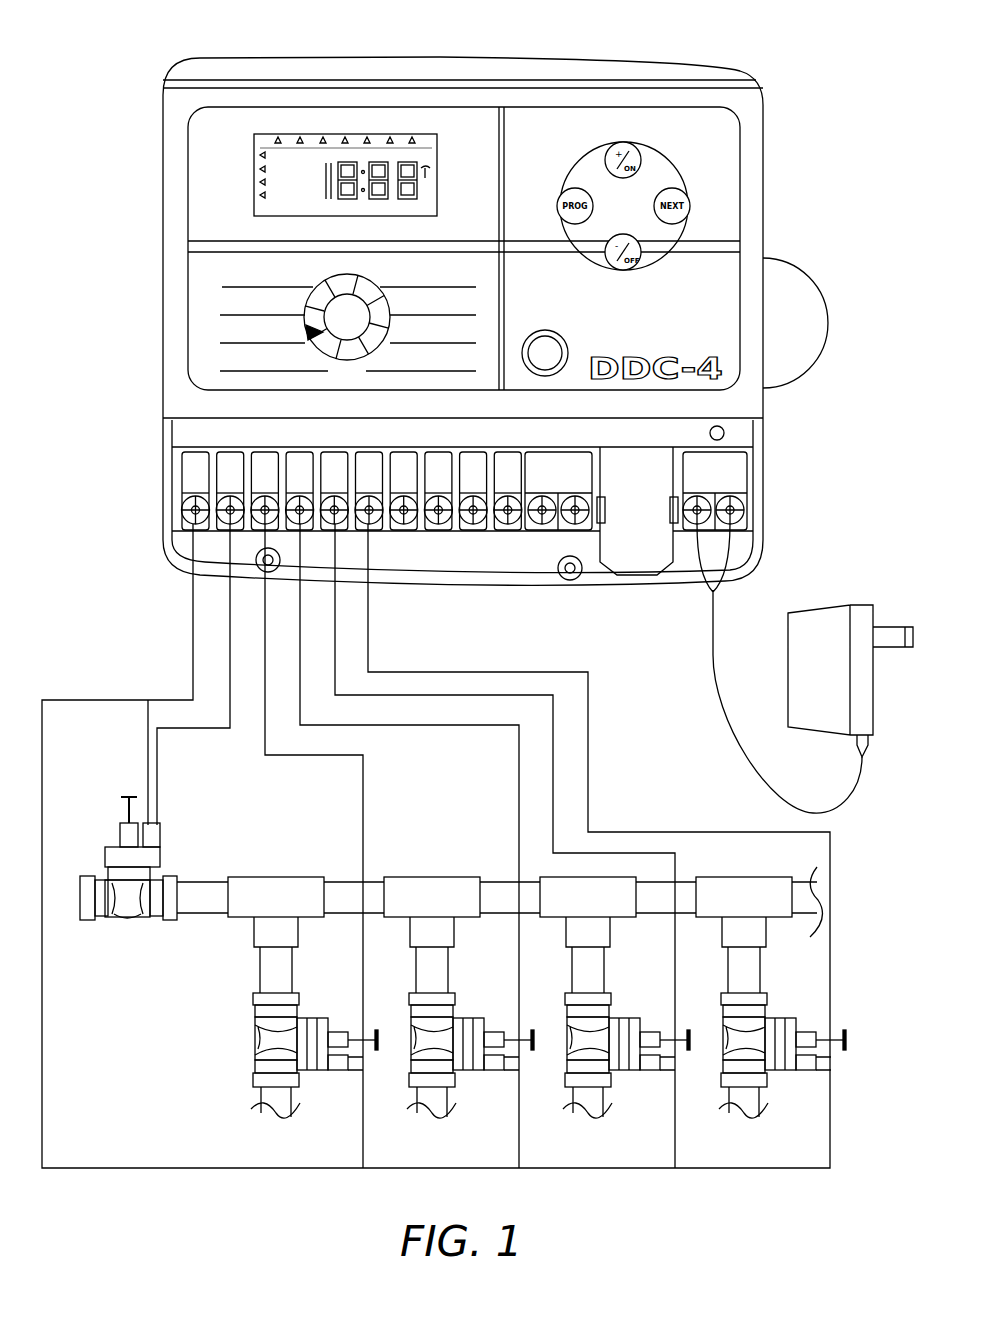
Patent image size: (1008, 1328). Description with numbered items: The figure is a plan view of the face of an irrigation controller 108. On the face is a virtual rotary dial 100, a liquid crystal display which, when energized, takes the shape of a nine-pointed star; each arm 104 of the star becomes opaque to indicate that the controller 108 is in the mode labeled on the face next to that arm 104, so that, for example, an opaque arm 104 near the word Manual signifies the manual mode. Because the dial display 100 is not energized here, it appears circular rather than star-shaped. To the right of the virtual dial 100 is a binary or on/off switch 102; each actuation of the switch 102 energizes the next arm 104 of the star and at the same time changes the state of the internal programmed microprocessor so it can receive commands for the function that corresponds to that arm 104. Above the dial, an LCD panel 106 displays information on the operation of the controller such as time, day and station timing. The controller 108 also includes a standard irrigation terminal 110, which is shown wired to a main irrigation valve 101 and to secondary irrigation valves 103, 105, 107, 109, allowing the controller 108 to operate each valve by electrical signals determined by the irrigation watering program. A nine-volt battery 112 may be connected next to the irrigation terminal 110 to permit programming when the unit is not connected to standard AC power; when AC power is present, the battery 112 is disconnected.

The virtual rotary dial 100 is at (312, 281).
The main irrigation valve 101 is at (102, 855).
The binary or on/off switch 102 is at (568, 340).
The secondary irrigation valve 103 is at (318, 1070).
The arm 104 is at (318, 331).
The secondary irrigation valve 105 is at (474, 1070).
The LCD panel 106 is at (437, 133).
The secondary irrigation valve 107 is at (630, 1070).
The irrigation controller 108 is at (160, 367).
The secondary irrigation valve 109 is at (786, 1070).
The irrigation terminal 110 is at (162, 488).
The 9V battery 112 is at (637, 553).